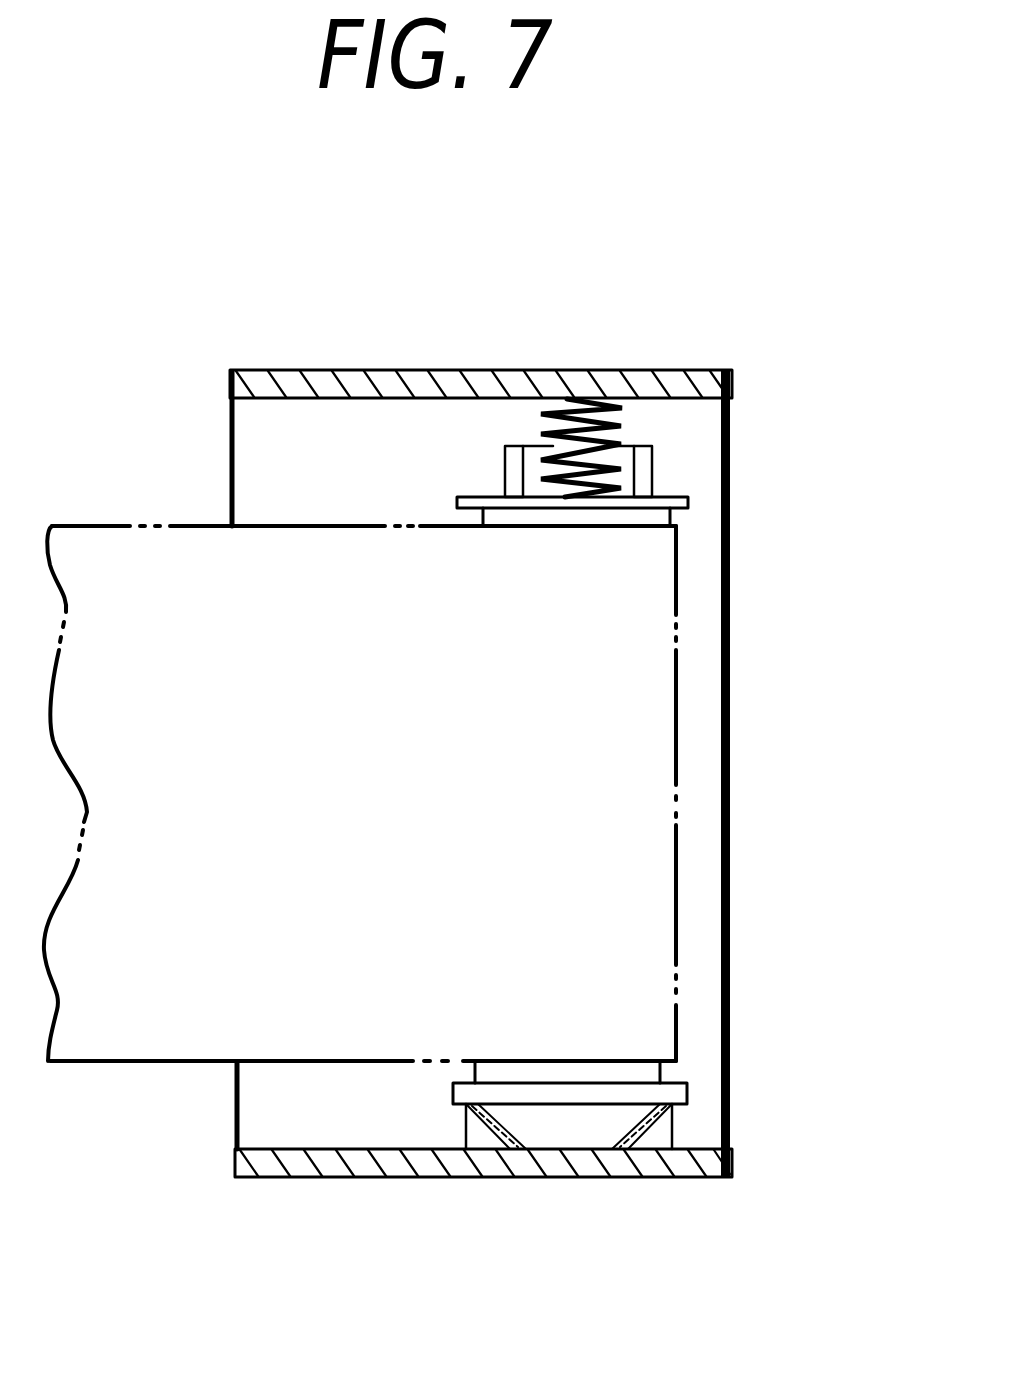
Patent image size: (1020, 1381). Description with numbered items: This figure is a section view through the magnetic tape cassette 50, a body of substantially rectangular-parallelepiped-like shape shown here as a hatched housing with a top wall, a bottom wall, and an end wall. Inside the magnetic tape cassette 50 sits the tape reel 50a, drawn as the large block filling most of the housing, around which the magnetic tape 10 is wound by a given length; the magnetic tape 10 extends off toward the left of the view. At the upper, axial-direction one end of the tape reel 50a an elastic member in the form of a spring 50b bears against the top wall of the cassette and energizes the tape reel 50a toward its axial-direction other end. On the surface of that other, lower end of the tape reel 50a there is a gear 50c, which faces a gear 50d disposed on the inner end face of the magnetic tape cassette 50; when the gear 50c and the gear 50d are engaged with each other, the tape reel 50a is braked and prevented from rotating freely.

The magnetic tape 10 is at (107, 1031).
The magnetic tape cassette 50 is at (394, 370).
The tape reel 50a is at (688, 500).
The spring 50b is at (618, 412).
The gear 50c is at (567, 1127).
The gear 50d is at (657, 1140).